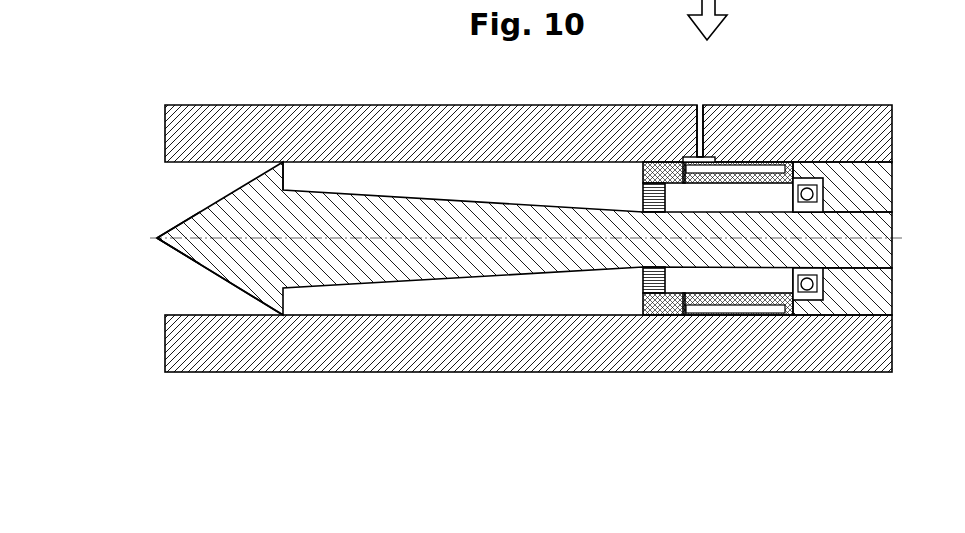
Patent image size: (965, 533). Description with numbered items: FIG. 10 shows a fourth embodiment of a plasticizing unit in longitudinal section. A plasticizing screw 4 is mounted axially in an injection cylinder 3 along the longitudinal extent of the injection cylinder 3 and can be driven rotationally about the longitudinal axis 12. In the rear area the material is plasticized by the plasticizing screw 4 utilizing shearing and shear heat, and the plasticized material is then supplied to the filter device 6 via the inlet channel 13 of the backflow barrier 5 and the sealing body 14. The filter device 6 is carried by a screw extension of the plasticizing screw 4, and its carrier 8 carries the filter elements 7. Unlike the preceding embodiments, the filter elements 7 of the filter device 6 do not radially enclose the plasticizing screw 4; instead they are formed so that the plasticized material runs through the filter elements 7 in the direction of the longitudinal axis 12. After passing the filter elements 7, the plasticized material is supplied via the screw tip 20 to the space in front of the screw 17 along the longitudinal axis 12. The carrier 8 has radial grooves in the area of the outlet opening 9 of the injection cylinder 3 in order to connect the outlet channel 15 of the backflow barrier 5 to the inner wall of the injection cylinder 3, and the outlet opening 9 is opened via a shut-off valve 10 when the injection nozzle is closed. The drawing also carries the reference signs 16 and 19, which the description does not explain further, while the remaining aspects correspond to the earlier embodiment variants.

The injection cylinder 3 is at (185, 125).
The plasticizing screw 4 is at (378, 207).
The backflow barrier 5 is at (813, 302).
The filter device 6 is at (553, 315).
The filter element 7 is at (647, 200).
The carrier 8 is at (666, 168).
The outlet opening 9 is at (747, 117).
The shut-off valve 10 is at (702, 130).
The longitudinal axis 12 is at (157, 238).
The inlet channel 13 is at (880, 307).
The sealing body 14 is at (809, 285).
The outlet channel 15 is at (705, 331).
The shoulder 16 is at (281, 163).
The space in front of the screw 17 is at (187, 208).
The guide 19 is at (682, 282).
The screw tip 20 is at (180, 242).